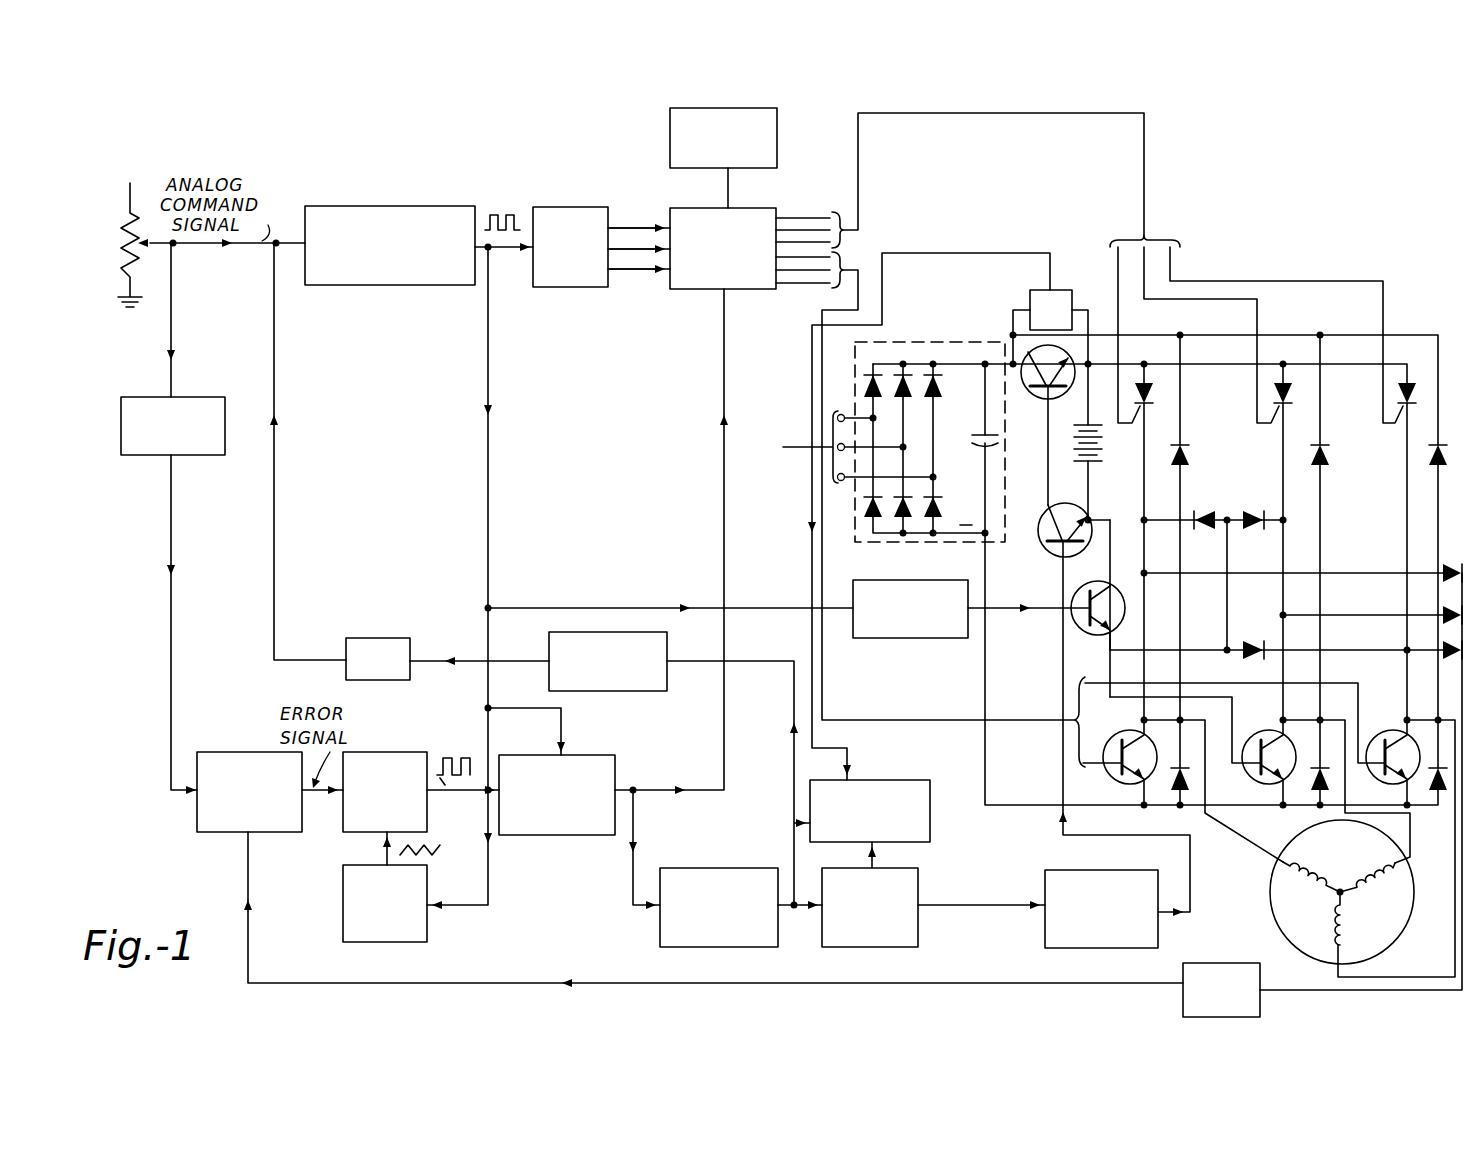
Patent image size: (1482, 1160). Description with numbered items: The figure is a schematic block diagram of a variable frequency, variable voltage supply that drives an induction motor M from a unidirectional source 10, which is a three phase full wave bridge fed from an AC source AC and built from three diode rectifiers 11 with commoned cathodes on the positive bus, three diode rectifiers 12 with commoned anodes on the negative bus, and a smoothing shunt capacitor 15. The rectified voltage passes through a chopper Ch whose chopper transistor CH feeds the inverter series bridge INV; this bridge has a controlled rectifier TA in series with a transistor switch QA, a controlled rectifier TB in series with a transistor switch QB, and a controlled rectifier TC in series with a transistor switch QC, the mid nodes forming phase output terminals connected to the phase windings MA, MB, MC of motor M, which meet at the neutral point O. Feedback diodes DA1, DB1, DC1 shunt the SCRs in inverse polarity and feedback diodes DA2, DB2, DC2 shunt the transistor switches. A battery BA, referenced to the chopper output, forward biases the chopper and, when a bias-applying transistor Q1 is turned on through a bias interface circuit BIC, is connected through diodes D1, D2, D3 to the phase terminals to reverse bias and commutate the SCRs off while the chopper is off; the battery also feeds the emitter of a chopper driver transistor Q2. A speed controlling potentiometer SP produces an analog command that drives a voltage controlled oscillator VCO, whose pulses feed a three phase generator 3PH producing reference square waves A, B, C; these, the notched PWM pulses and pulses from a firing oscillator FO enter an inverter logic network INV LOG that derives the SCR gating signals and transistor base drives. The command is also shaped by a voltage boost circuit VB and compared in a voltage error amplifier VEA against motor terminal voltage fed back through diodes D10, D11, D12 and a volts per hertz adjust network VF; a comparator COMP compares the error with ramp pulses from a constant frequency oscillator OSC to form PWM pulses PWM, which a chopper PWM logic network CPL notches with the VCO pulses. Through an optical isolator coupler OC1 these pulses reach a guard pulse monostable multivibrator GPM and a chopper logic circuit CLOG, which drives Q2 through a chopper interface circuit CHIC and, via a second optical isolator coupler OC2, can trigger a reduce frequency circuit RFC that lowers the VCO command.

The speed controlling potentiometer SP is at (128, 223).
The voltage controlled oscillator VCO is at (380, 206).
The voltage boost circuit VB is at (198, 397).
The three phase generator 3PH is at (570, 247).
The phase A reference square wave A is at (629, 228).
The phase B reference square wave B is at (635, 240).
The phase C reference square wave C is at (632, 273).
The inverter logic network INV LOG is at (693, 290).
The firing oscillator FO is at (778, 157).
The unidirectional source 10 is at (897, 341).
The diode rectifiers 11 is at (866, 386).
The diode rectifiers 12 is at (880, 530).
The smoothing shunt capacitor 15 is at (980, 445).
The AC source AC is at (785, 448).
The chopper Ch is at (1052, 293).
The chopper transistor CH is at (1027, 398).
The bias source battery BA is at (1092, 466).
The bias-applying transistor Q1 is at (1088, 635).
The chopper driver transistor Q2 is at (1050, 550).
The bias interface circuit BIC is at (877, 639).
The controlled rectifier TA is at (1146, 410).
The controlled rectifier TB is at (1286, 410).
The controlled rectifier TC is at (1398, 396).
The feedback diode DA1 is at (1190, 456).
The feedback diode DB1 is at (1330, 456).
The feedback diode DC1 is at (1430, 460).
The diode D1 is at (1208, 517).
The diode D2 is at (1254, 517).
The diode D3 is at (1252, 641).
The inverter series bridge INV is at (1376, 564).
The feedback diode D10 is at (1440, 578).
The feedback diode D11 is at (1440, 620).
The feedback diode D12 is at (1440, 655).
The transistor switch QA is at (1107, 779).
The transistor switch QB is at (1245, 779).
The transistor switch QC is at (1400, 736).
The feedback diode DA2 is at (1172, 796).
The feedback diode DB2 is at (1312, 796).
The feedback diode DC2 is at (1438, 796).
The induction motor M is at (1317, 892).
The phase winding MA is at (1312, 885).
The phase winding MB is at (1372, 866).
The phase winding MC is at (1345, 938).
The neutral point O is at (1345, 893).
The chopper interface circuit CHIC is at (1092, 870).
The chopper logic circuit CLOG is at (893, 772).
The guard pulse monostable multivibrator GPM is at (860, 947).
The optical isolator coupler OC1 is at (703, 947).
The optical isolator coupler OC2 is at (650, 692).
The reduce frequency circuit RFC is at (378, 659).
The chopper PWM logic network CPL is at (618, 761).
The comparator COMP is at (393, 752).
The PWM pulses PWM is at (452, 755).
The constant frequency oscillator OSC is at (427, 931).
The voltage error amplifier VEA is at (200, 833).
The V/f ADJ network VF is at (1221, 990).